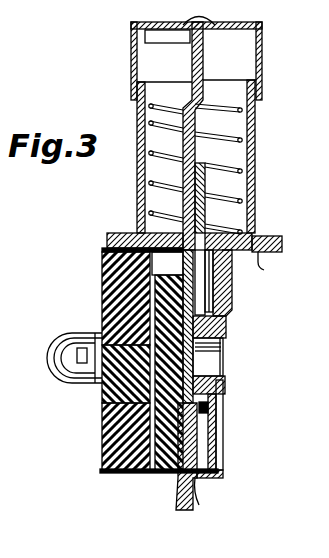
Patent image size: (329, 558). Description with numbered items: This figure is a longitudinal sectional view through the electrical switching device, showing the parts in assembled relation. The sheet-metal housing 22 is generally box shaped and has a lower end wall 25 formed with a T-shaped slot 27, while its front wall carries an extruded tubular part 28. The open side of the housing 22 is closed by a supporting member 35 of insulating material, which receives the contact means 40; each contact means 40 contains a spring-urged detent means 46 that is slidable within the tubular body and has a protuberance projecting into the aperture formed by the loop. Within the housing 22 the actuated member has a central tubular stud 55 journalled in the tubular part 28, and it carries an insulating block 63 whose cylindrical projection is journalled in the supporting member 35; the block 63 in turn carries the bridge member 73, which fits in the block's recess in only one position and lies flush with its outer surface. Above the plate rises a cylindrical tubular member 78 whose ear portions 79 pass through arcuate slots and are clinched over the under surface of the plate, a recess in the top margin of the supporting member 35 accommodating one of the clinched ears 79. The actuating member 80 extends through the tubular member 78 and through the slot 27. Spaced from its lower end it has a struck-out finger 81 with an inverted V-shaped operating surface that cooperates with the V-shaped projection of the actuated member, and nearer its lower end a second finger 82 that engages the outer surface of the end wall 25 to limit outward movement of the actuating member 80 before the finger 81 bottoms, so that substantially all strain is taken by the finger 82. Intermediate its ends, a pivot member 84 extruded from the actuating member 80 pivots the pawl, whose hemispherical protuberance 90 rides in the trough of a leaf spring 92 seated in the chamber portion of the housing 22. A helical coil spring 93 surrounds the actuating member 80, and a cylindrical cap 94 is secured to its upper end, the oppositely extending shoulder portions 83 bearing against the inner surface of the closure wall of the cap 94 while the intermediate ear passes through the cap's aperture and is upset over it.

The housing 22 is at (222, 463).
The end wall 25 is at (148, 463).
The T-shaped slot 27 is at (199, 480).
The tubular part 28 is at (227, 330).
The supporting member 35 is at (101, 300).
The contact means 40 is at (46, 369).
The detent means 46 is at (80, 355).
The tubular stud 55 is at (226, 378).
The block 63 is at (160, 472).
The bridge member 73 is at (102, 425).
The tubular member 78 is at (137, 112).
The ear portions 79 is at (104, 251).
The actuating member 80 is at (248, 166).
The struck-out finger 81 is at (210, 410).
The second finger 82 is at (176, 490).
The shoulder portions 83 is at (161, 38).
The pivot member 84 is at (252, 205).
The protuberance 90 is at (200, 23).
The leaf spring 92 is at (214, 288).
The helical coil spring 93 is at (250, 128).
The cylindrical cap 94 is at (132, 62).